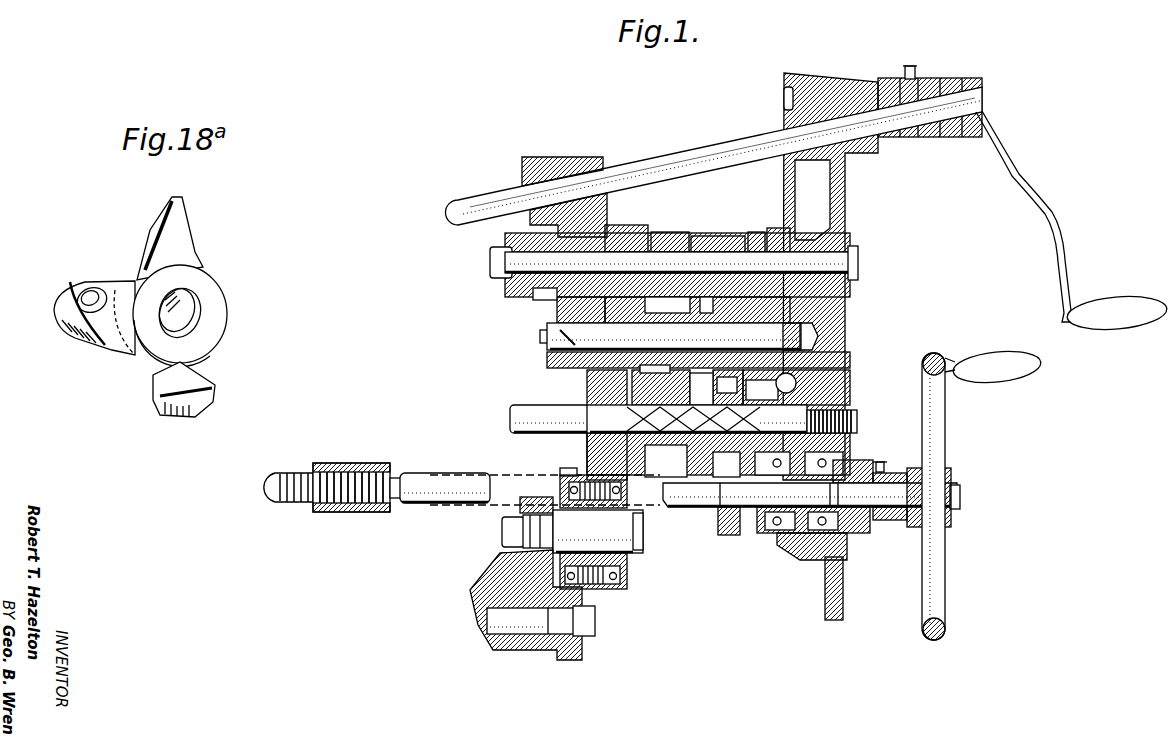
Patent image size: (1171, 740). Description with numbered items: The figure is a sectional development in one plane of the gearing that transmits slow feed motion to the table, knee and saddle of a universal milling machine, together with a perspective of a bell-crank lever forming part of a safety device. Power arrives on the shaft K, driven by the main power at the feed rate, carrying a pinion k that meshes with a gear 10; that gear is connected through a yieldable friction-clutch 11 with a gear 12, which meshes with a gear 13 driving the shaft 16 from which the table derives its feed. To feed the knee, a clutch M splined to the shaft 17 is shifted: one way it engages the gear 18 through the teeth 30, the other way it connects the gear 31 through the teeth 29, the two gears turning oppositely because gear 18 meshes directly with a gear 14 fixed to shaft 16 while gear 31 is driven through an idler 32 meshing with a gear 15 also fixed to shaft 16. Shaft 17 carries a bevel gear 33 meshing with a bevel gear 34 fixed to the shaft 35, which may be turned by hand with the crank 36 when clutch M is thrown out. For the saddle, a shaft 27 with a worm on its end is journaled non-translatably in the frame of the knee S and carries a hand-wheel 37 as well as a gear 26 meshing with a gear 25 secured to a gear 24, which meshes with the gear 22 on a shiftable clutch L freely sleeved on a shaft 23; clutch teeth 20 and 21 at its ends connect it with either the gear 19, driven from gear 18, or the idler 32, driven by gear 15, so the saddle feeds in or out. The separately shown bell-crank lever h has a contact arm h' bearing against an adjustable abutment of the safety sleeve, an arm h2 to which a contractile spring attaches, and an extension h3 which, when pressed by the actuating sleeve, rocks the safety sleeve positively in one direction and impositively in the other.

In FIG. 1, the gear 10 is at (565, 468).
In FIG. 1, the yieldable friction-clutch 11 is at (558, 487).
In FIG. 1, the gear 12 is at (605, 590).
In FIG. 1, the gear 13 is at (587, 403).
In FIG. 1, the gear 14 is at (592, 380).
In FIG. 1, the gear 15 is at (750, 388).
In FIG. 1, the shaft 16 is at (522, 406).
In FIG. 1, the shaft 17 is at (848, 262).
In FIG. 1, the gear 18 is at (630, 226).
In FIG. 1, the gear 19 is at (557, 308).
In FIG. 1, the clutch teeth 20 is at (660, 375).
In FIG. 1, the clutch teeth 21 is at (697, 308).
In FIG. 1, the gear 22 is at (694, 303).
In FIG. 1, the shaft 23 is at (545, 342).
In FIG. 1, the gear 24 is at (700, 495).
In FIG. 1, the gear 25 is at (716, 387).
In FIG. 1, the gear 26 is at (347, 466).
In FIG. 1, the shaft 27 is at (446, 478).
In FIG. 1, the teeth 29 is at (752, 236).
In FIG. 1, the teeth 30 is at (670, 233).
In FIG. 1, the gear 31 is at (770, 233).
In FIG. 1, the idler gear 32 is at (835, 322).
In FIG. 1, the bevel gear 33 is at (533, 295).
In FIG. 1, the bevel gear 34 is at (528, 166).
In FIG. 1, the shaft 35 is at (682, 152).
In FIG. 1, the crank 36 is at (1013, 170).
In FIG. 1, the hand-wheel 37 is at (945, 403).
In FIG. 1, the clutch M is at (703, 236).
In FIG. 1, the shiftable clutch L is at (667, 305).
In FIG. 1, the shaft K is at (487, 617).
In FIG. 1, the pinion k is at (560, 656).
In FIG. 1, the knee S is at (843, 575).
In FIG. 18A, the bell-crank lever h is at (179, 315).
In FIG. 18A, the contact arm h' is at (174, 238).
In FIG. 18A, the arm h2 is at (70, 286).
In FIG. 18A, the extension h3 is at (213, 388).